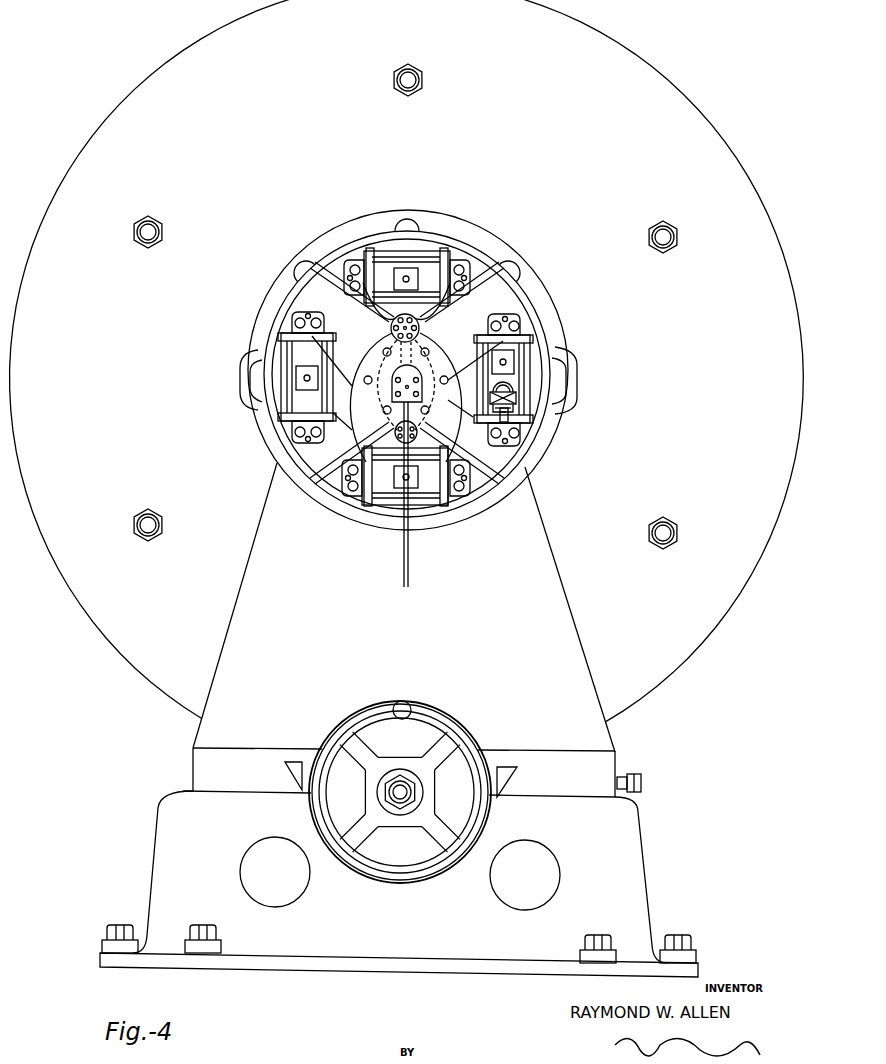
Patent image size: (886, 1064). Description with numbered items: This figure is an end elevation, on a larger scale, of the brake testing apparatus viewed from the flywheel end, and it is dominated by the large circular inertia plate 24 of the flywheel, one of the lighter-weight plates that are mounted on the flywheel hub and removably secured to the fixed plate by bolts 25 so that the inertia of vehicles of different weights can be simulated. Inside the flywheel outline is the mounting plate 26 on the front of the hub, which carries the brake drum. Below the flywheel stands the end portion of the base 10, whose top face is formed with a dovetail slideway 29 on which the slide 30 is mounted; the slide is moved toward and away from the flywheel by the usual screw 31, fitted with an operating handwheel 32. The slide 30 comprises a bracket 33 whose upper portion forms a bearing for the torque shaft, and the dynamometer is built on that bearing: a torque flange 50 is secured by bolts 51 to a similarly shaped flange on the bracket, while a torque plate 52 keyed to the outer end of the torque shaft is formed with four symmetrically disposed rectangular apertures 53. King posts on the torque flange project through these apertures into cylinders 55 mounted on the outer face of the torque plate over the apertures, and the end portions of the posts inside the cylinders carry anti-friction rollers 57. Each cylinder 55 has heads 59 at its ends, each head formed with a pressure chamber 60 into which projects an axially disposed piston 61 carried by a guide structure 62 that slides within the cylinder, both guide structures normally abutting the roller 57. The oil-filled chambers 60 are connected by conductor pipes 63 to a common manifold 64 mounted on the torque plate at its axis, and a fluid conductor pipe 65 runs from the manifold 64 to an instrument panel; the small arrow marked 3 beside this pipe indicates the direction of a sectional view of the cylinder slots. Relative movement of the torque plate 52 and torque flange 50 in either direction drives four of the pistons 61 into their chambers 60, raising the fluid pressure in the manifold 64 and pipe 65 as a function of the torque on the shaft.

The section line indicator 3 is at (401, 548).
The base 10 is at (165, 840).
The inertia plates 24 is at (668, 82).
The bolts 25 is at (424, 80).
The mounting plate 26 is at (555, 290).
The dovetail slideway 29 is at (298, 790).
The slide 30 is at (603, 766).
The screw 31 is at (400, 800).
The operating handwheel 32 is at (360, 865).
The bracket 33 is at (537, 521).
The torque flange 50 is at (562, 348).
The bolts 51 is at (248, 372).
The torque plate 52 is at (480, 252).
The rectangular apertures 53 is at (422, 248).
The cylinders 55 is at (384, 276).
The anti-friction rollers 57 is at (518, 392).
The heads 59 is at (367, 253).
The pressure chamber 60 is at (520, 437).
The piston 61 is at (513, 410).
The guide structure 62 is at (520, 400).
The conductor pipes 63 is at (392, 303).
The manifold 64 is at (380, 354).
The fluid conductor pipe 65 is at (410, 577).